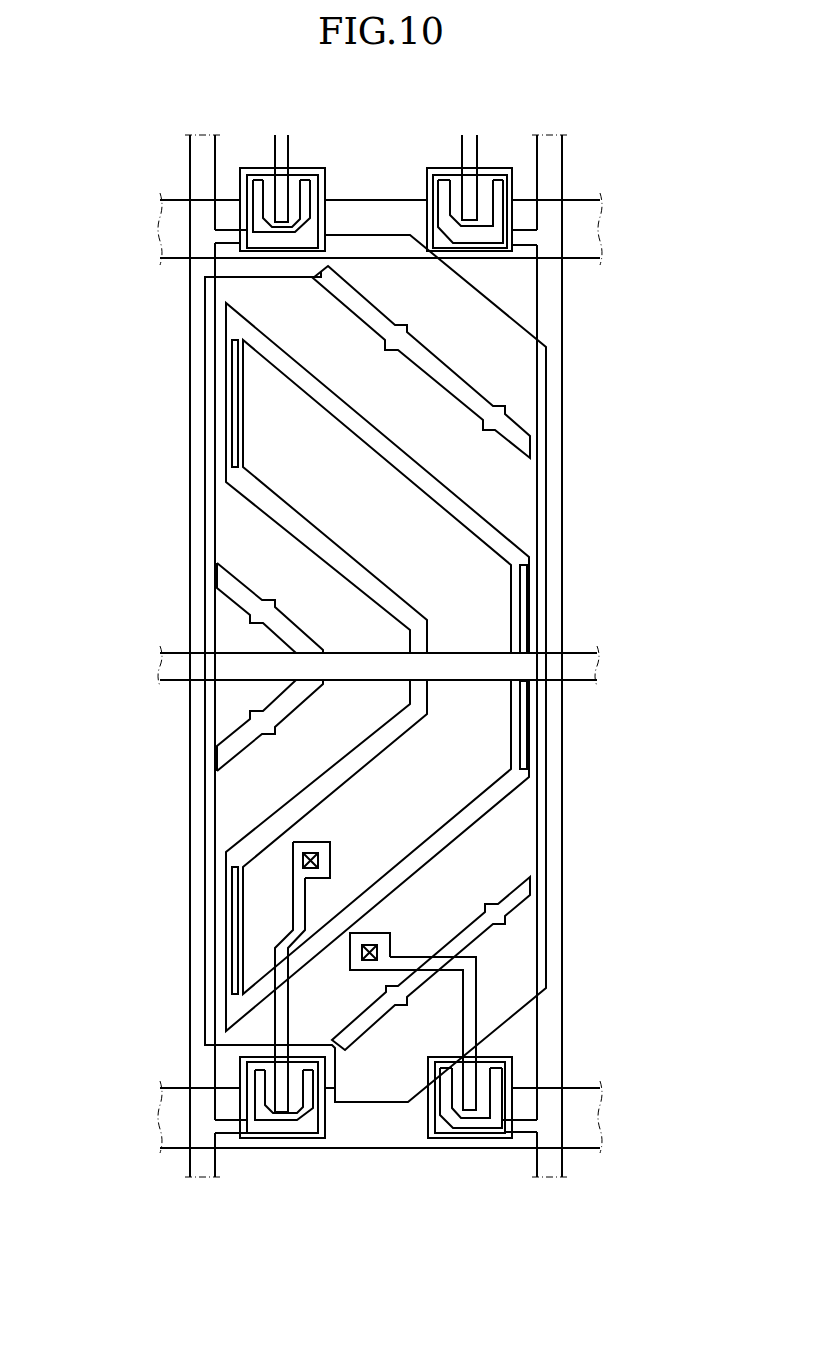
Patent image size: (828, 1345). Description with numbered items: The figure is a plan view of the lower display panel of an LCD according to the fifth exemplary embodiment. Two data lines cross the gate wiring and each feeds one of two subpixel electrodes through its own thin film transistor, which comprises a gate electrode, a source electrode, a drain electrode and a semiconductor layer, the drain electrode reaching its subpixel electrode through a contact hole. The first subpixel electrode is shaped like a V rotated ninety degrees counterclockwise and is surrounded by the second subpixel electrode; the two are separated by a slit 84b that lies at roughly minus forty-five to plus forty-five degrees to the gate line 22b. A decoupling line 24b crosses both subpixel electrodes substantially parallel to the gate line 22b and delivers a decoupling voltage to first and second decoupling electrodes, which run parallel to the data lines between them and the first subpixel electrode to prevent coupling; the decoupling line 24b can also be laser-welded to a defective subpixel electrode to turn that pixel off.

The slit 84b is at (418, 480).
The decoupling line 24b is at (585, 682).
The gate line 22b is at (172, 1134).